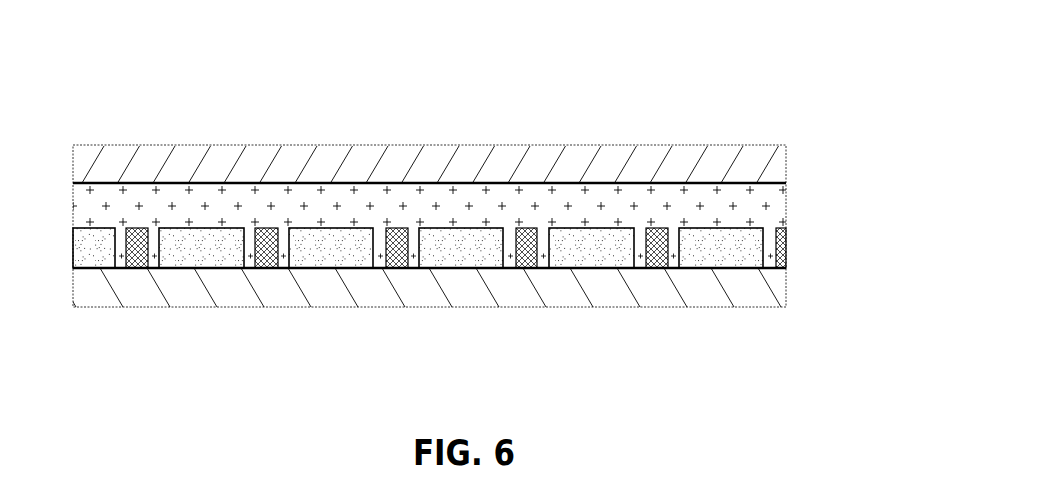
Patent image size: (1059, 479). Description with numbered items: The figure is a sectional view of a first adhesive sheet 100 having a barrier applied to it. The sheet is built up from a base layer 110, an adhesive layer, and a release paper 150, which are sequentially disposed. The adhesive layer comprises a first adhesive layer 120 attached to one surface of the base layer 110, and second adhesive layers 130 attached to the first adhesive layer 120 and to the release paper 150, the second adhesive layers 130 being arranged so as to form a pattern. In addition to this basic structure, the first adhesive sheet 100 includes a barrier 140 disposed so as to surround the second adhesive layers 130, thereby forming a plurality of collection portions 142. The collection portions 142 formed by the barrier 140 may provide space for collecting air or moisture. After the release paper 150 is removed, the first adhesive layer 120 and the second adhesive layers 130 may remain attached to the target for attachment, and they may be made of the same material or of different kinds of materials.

The first adhesive sheet 100 is at (742, 73).
The base layer 110 is at (242, 165).
The first adhesive layer 120 is at (362, 207).
The second adhesive layers 130 is at (465, 245).
The barrier 140 is at (523, 243).
The collection portions 142 is at (155, 246).
The release paper 150 is at (607, 290).